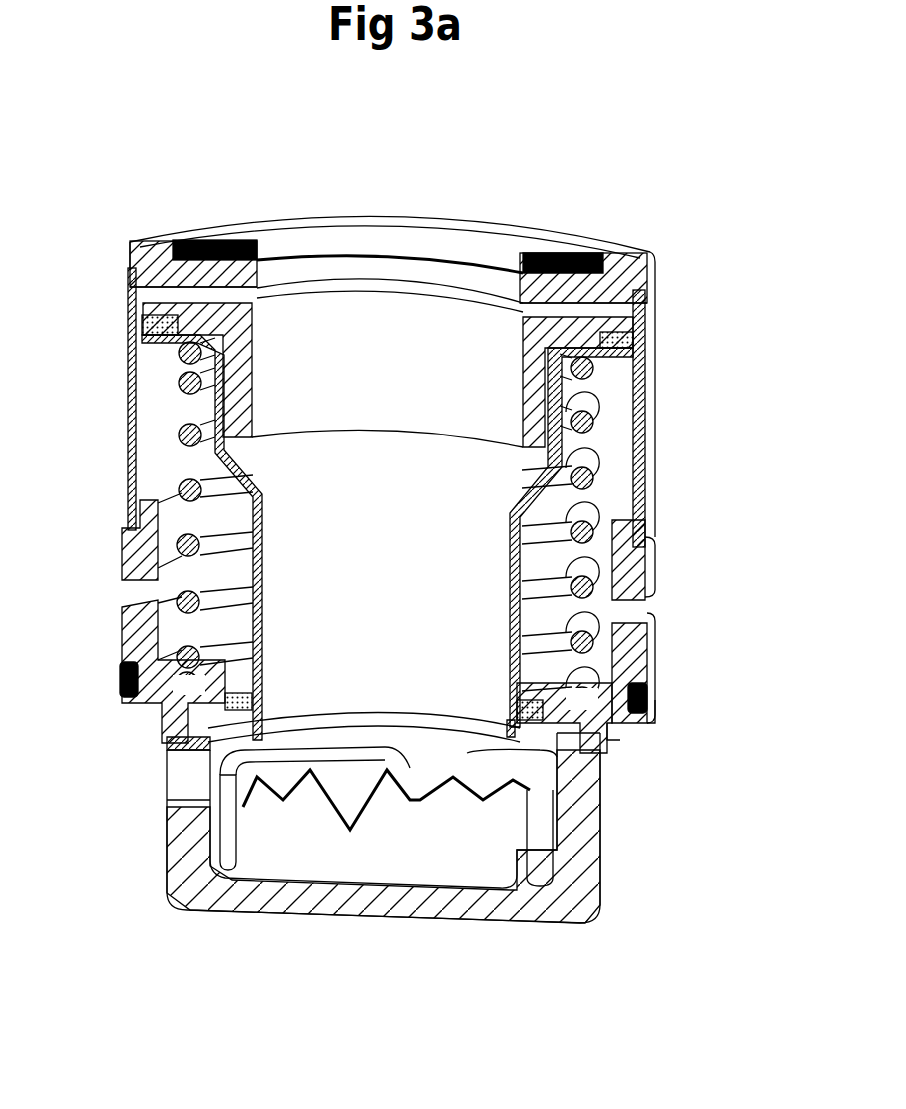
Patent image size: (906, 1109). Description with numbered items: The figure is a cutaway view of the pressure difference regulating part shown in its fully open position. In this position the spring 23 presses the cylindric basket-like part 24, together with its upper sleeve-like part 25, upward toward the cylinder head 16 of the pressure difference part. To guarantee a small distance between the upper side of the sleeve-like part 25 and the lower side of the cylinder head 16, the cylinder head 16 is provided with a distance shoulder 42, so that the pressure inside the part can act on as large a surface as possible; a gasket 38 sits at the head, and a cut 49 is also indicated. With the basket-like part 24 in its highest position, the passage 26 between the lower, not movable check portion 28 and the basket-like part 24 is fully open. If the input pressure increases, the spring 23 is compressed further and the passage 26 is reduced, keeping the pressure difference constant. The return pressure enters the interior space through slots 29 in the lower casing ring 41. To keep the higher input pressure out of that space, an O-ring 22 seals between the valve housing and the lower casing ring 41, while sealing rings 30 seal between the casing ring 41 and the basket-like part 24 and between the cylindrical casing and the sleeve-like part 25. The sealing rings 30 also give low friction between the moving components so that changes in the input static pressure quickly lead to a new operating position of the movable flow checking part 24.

The cylinder head of the pressure difference part 16 is at (657, 260).
The gasket 38 is at (577, 232).
The distance shoulder 42 is at (643, 308).
The sleeve-like part 25 is at (527, 370).
The cylindric basket-like part 24 is at (527, 537).
The spring 23 is at (600, 477).
The slot 29 is at (612, 616).
The lower casing ring 41 is at (647, 652).
The sealing ring 30 is at (647, 683).
The O-ring 22 is at (643, 717).
The passage 26 is at (540, 770).
The lower, not movable check portion 28 is at (570, 858).
The cut 49 is at (167, 783).